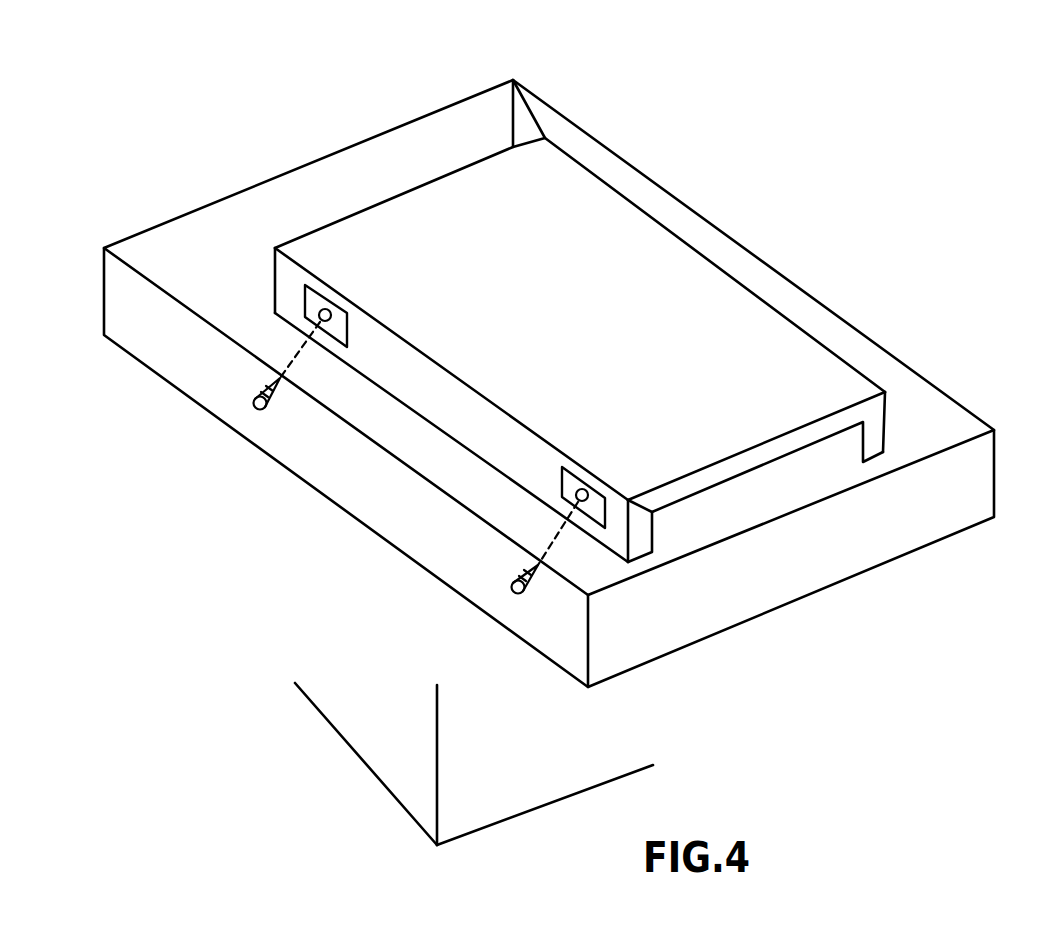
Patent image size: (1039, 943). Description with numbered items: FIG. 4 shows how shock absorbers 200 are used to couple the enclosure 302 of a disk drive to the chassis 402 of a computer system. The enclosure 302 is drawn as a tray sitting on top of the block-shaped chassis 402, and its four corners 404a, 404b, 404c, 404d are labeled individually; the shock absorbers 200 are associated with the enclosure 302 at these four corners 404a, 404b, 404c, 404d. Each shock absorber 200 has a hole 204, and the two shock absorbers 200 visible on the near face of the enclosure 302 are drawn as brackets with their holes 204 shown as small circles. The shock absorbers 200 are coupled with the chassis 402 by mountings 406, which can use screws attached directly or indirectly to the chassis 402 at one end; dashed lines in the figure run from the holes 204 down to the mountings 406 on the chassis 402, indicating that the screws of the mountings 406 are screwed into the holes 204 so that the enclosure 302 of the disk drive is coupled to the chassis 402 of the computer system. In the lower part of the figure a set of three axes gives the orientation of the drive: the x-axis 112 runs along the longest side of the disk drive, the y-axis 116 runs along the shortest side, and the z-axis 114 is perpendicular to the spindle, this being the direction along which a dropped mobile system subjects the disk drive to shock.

The chassis 402 is at (638, 622).
The enclosure 302 is at (667, 290).
The corner 404a is at (279, 247).
The corner 404b is at (544, 138).
The corner 404c is at (629, 500).
The corner 404d is at (885, 392).
The shock absorbers 200 is at (587, 512).
The holes 204 is at (581, 487).
The mountings 406 is at (512, 587).
The x-axis 112 is at (358, 757).
The z-axis 114 is at (437, 733).
The y-axis 116 is at (507, 819).